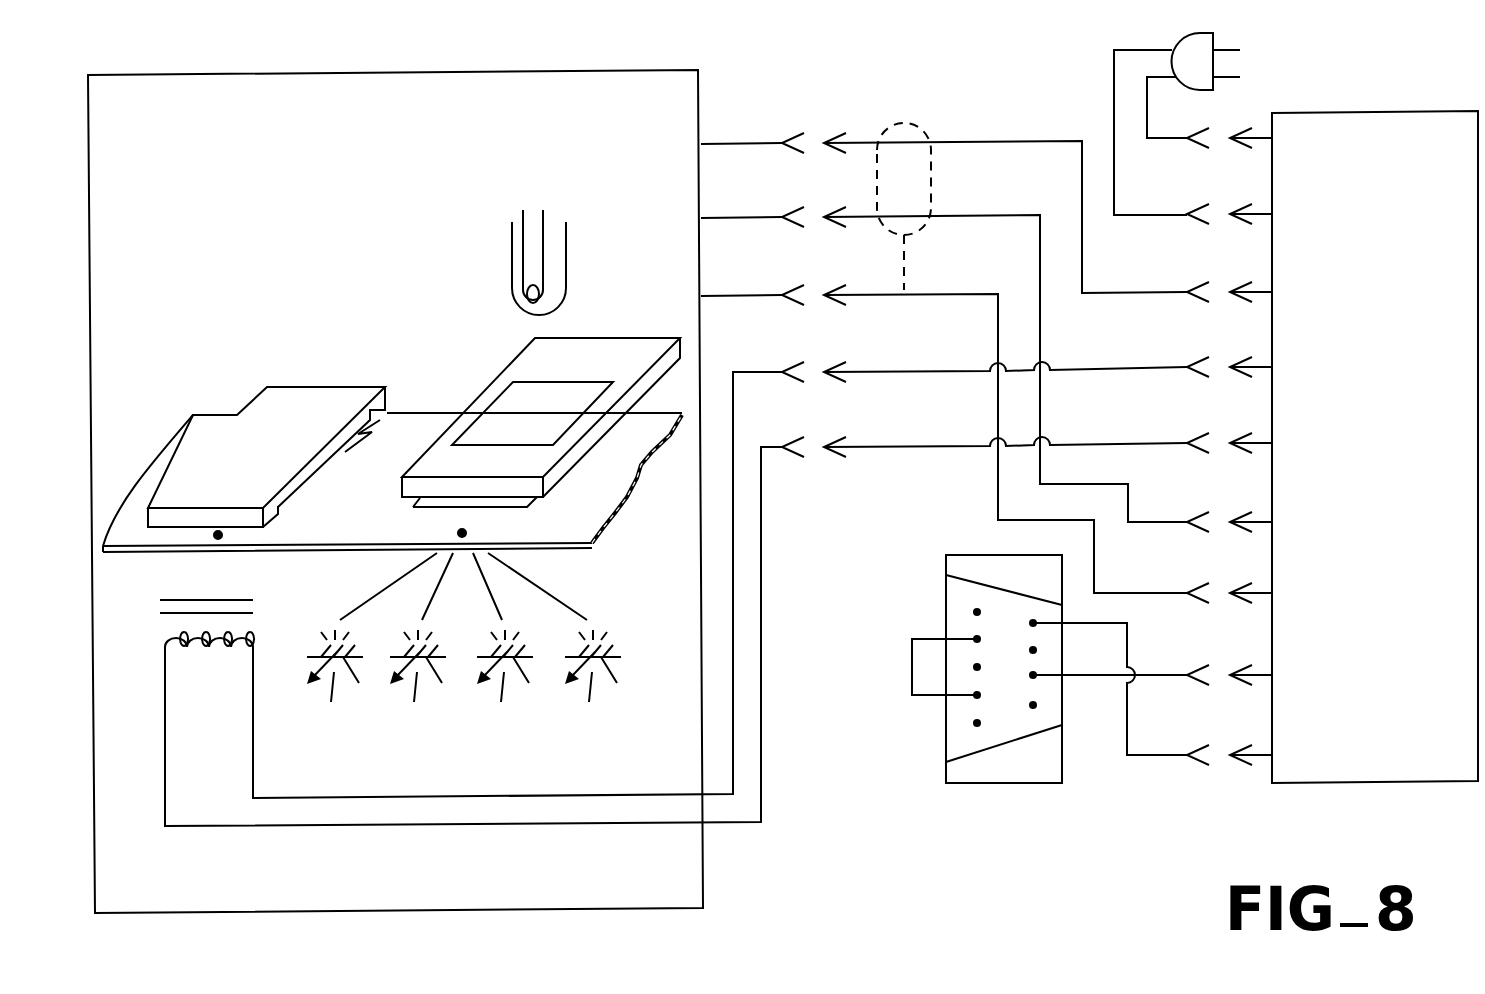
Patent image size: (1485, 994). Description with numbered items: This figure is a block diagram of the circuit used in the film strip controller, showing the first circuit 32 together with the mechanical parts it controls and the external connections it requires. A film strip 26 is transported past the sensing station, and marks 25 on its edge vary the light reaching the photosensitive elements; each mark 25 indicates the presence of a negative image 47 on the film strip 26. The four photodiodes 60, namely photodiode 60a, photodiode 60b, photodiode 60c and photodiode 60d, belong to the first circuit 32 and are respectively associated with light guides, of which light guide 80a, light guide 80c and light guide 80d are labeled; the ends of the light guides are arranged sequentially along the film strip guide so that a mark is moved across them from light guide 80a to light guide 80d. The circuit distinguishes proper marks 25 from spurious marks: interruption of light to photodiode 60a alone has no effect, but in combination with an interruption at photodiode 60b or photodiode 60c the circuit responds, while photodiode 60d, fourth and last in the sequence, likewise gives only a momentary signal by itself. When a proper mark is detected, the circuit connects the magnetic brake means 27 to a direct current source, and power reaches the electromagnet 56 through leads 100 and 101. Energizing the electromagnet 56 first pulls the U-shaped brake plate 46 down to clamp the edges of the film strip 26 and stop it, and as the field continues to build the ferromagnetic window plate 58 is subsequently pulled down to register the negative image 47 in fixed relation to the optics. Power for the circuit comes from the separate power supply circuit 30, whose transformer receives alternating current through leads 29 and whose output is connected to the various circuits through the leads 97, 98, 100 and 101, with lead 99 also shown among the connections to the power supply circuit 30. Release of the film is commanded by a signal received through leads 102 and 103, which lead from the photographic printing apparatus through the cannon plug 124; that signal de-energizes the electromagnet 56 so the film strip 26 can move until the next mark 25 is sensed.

The first circuit 32 is at (494, 61).
The leads 29 is at (1240, 50).
The power supply circuit 30 is at (1356, 447).
The lead 98 is at (1229, 277).
The lead 101 is at (1229, 353).
The lead 100 is at (1229, 430).
The connector line 99 is at (1229, 509).
The lead 97 is at (1229, 579).
The lead 102 is at (1229, 662).
The lead 103 is at (1231, 741).
The cannon plug 124 is at (1007, 785).
The brake plate 46 is at (278, 400).
The negative image 47 is at (347, 452).
The window plate 58 is at (612, 350).
The film strip 26 is at (612, 478).
The mark 25 is at (218, 538).
The magnetic brake means 27 is at (148, 605).
The electromagnet 56 is at (165, 640).
The photodiodes 60 is at (497, 681).
The photodiode 60a is at (593, 681).
The photodiode 60b is at (505, 681).
The photodiode 60c is at (418, 681).
The photodiode 60d is at (335, 681).
The light guide 80a is at (570, 603).
The light guide 80c is at (428, 598).
The light guide 80d is at (378, 592).